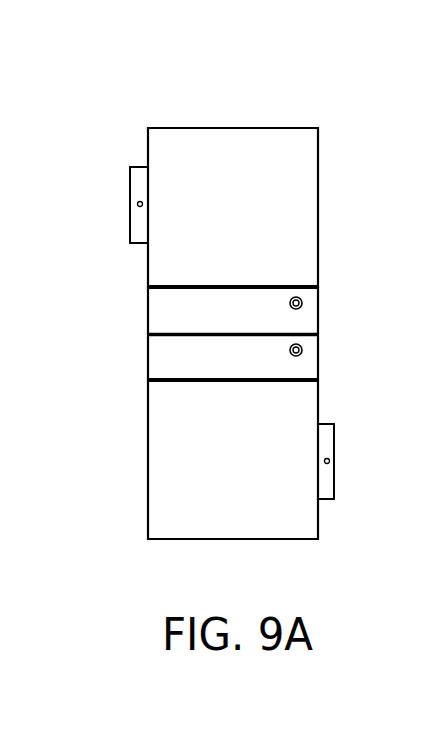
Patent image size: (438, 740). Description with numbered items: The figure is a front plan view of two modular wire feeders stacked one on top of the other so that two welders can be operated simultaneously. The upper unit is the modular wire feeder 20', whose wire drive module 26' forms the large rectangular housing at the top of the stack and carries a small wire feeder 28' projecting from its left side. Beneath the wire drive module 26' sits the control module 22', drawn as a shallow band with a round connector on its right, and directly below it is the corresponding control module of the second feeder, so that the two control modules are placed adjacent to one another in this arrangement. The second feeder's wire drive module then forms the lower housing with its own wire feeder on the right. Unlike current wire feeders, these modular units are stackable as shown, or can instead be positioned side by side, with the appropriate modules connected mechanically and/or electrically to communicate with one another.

The modular wire feeder 20' is at (102, 87).
The wire drive module 26' is at (233, 171).
The control module 22' is at (343, 295).
The wire feeder 28' is at (99, 206).